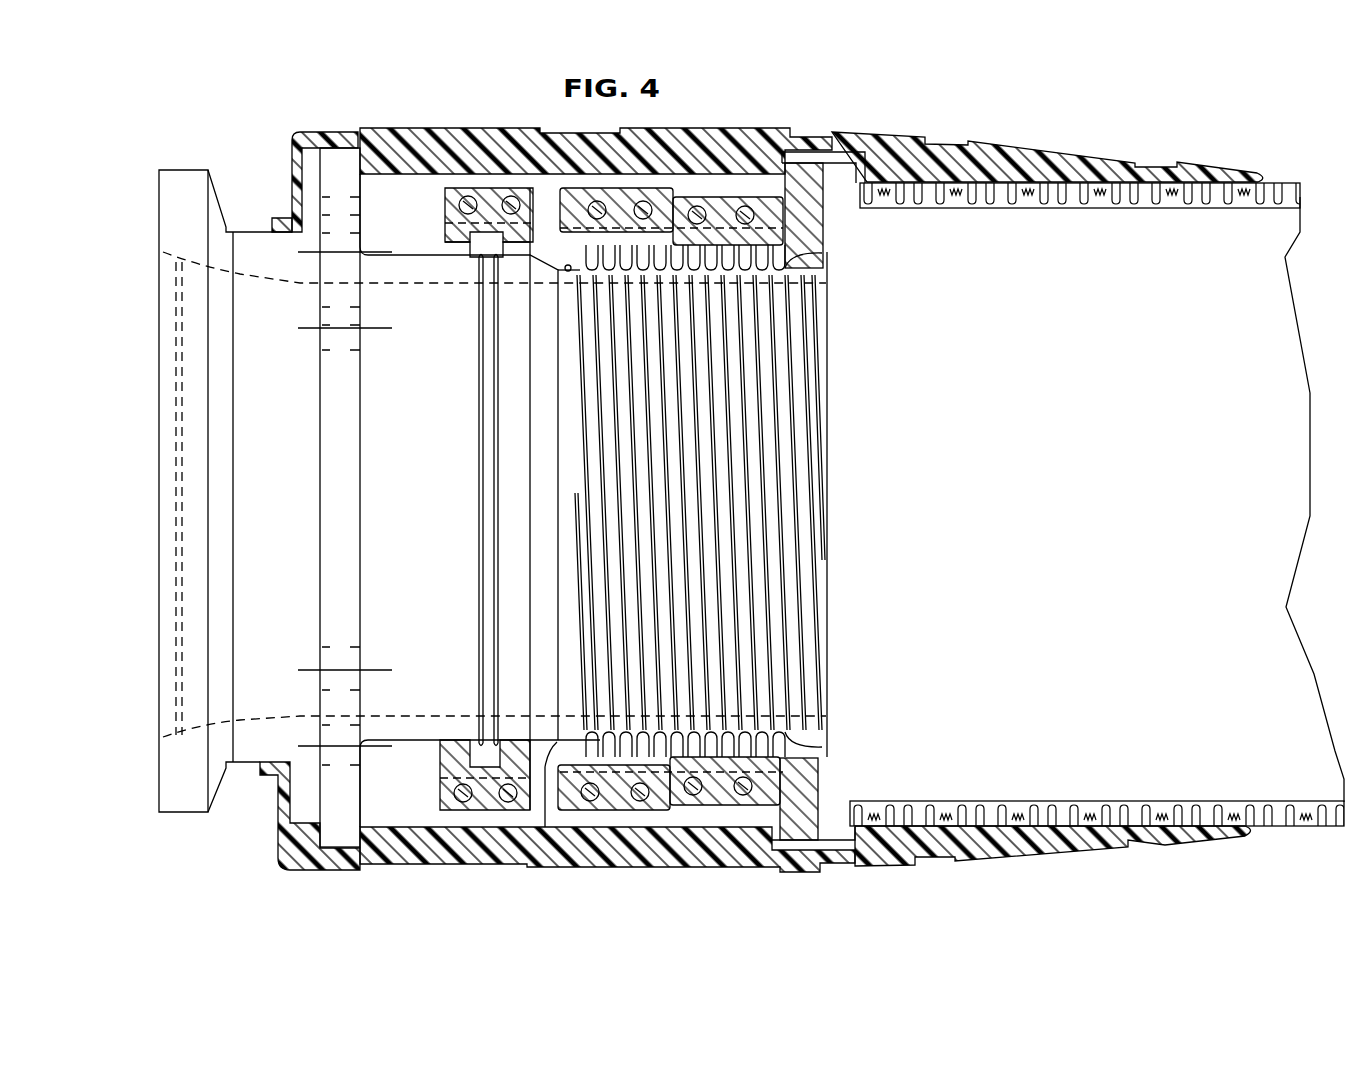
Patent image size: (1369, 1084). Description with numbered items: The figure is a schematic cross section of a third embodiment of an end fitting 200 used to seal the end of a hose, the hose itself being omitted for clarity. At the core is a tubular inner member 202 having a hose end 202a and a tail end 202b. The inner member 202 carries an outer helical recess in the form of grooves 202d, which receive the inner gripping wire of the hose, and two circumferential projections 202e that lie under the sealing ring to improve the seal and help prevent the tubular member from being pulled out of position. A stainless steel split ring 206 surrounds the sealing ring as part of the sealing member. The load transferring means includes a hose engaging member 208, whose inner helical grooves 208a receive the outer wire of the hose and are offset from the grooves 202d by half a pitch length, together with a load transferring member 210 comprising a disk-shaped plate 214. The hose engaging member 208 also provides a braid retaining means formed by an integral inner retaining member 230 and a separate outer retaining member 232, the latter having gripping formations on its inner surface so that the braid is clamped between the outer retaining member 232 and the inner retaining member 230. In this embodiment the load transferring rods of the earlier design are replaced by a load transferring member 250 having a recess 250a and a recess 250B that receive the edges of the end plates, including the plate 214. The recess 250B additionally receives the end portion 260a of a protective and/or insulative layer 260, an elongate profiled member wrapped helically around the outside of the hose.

The end fitting 200 is at (1103, 142).
The tubular inner member 202 is at (178, 170).
The hose end 202a is at (828, 403).
The tail end 202b is at (160, 268).
The grooves 202d is at (826, 272).
The circumferential projections 202e is at (470, 277).
The stainless steel split ring 206 is at (505, 190).
The hose engaging member 208 is at (745, 196).
The grooves 208a is at (747, 722).
The load transferring member 210 is at (675, 114).
The disk-shaped plate 214 is at (828, 228).
The inner retaining member 230 is at (545, 827).
The outer retaining member 232 is at (637, 815).
The load transferring member 250 is at (885, 134).
The recess 250a is at (313, 131).
The recess 250B is at (853, 812).
The protective and/or insulative layer 260 is at (1177, 210).
The end portion 260a is at (792, 152).